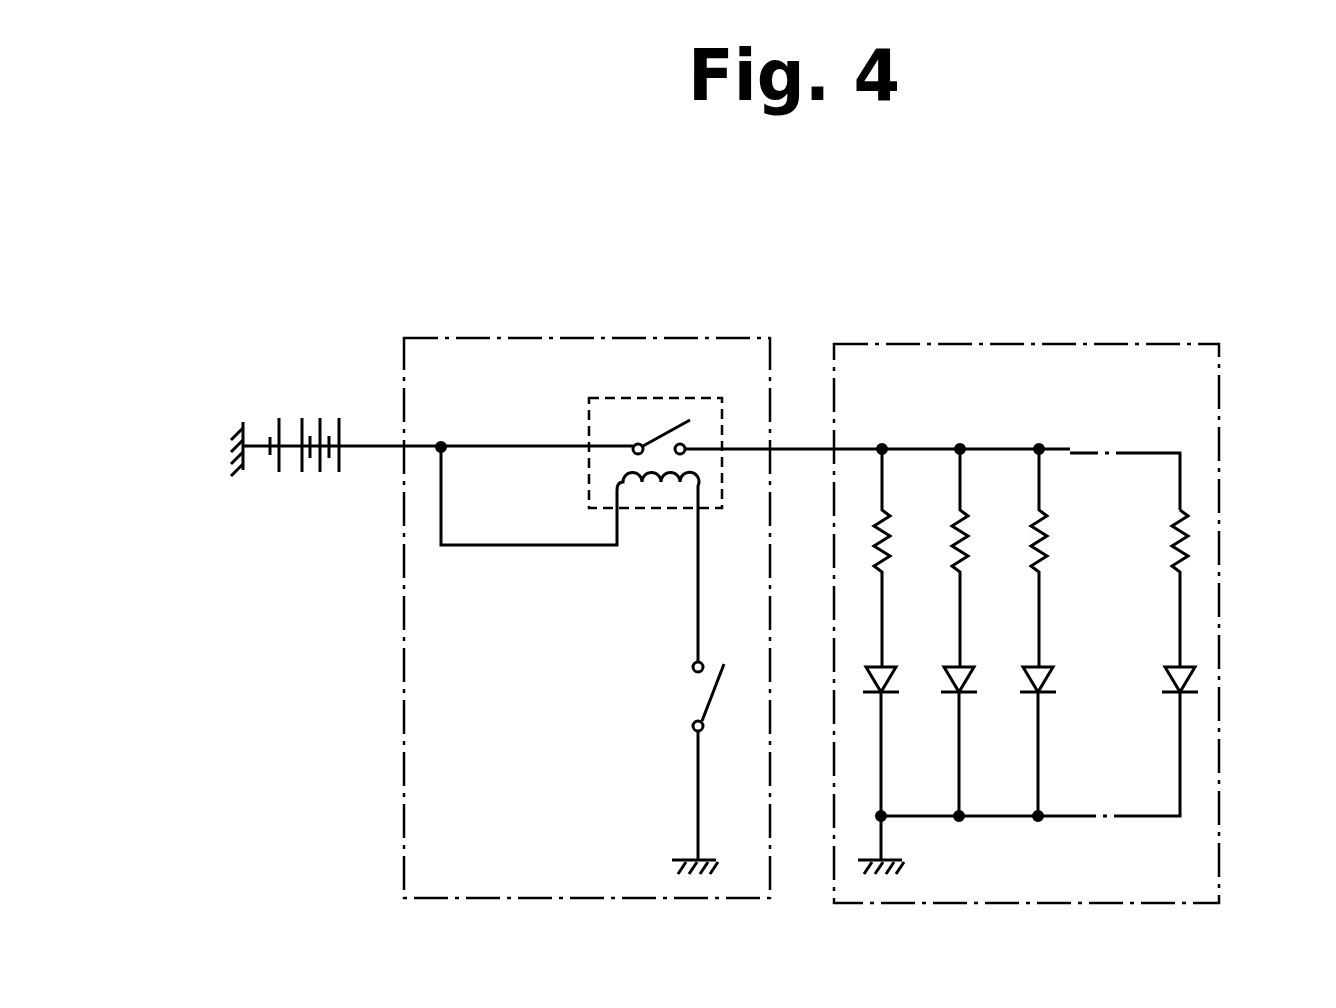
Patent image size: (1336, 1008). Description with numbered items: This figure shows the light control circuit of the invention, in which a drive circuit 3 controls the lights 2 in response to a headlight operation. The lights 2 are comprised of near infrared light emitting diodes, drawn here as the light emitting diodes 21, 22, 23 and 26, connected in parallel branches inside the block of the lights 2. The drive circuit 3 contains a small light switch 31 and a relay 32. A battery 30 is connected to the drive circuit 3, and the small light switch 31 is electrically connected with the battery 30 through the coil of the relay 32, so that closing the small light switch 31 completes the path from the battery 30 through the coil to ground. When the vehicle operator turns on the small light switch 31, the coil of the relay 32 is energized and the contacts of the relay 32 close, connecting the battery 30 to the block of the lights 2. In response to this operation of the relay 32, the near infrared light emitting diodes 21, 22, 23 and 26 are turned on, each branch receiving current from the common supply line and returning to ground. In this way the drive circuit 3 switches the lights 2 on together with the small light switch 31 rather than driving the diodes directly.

The lights 2 is at (993, 343).
The drive circuit 3 is at (576, 337).
The light emitting diode 21 is at (888, 679).
The light emitting diode 22 is at (966, 679).
The light emitting diode 23 is at (1046, 679).
The light emitting diode 26 is at (1195, 688).
The battery 30 is at (306, 418).
The small light switch 31 is at (693, 669).
The relay 32 is at (667, 432).